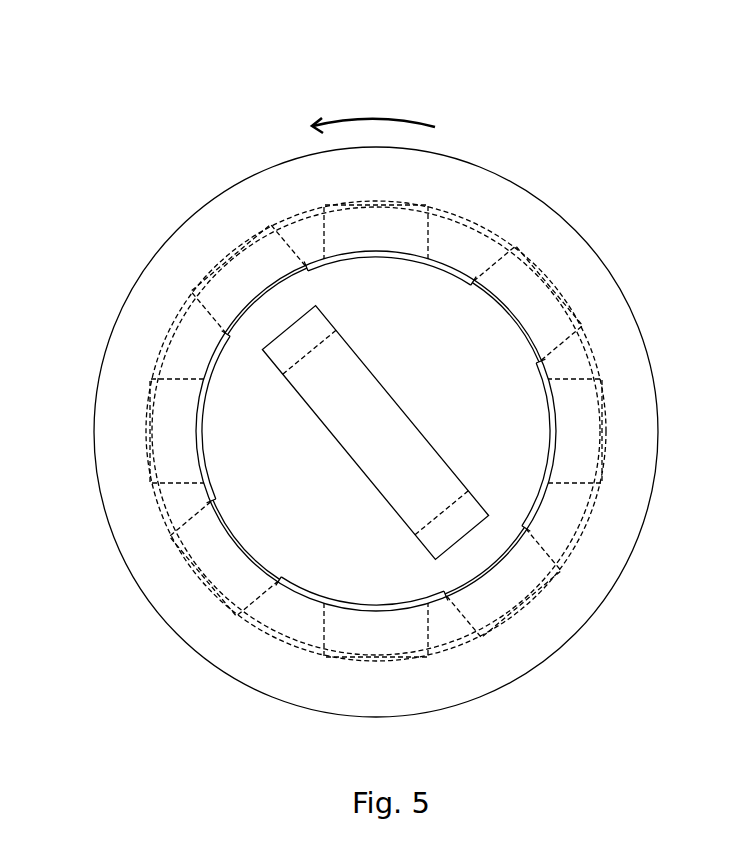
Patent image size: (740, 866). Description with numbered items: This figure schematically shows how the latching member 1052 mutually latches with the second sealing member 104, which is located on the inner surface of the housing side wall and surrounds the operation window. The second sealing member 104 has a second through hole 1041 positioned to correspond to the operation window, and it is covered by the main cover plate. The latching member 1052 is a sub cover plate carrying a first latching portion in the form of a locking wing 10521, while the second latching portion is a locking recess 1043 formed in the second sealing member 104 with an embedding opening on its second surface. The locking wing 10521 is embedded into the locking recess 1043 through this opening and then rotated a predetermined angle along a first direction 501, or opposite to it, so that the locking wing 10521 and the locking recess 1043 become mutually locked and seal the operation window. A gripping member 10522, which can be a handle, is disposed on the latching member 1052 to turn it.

The second sealing member 104 is at (265, 168).
The second through hole 1041 is at (198, 443).
The locking recess 1043 is at (175, 320).
The latching member 1052 is at (455, 285).
The locking wing 10521 is at (232, 265).
The gripping member 10522 is at (417, 427).
The first direction 501 is at (358, 118).